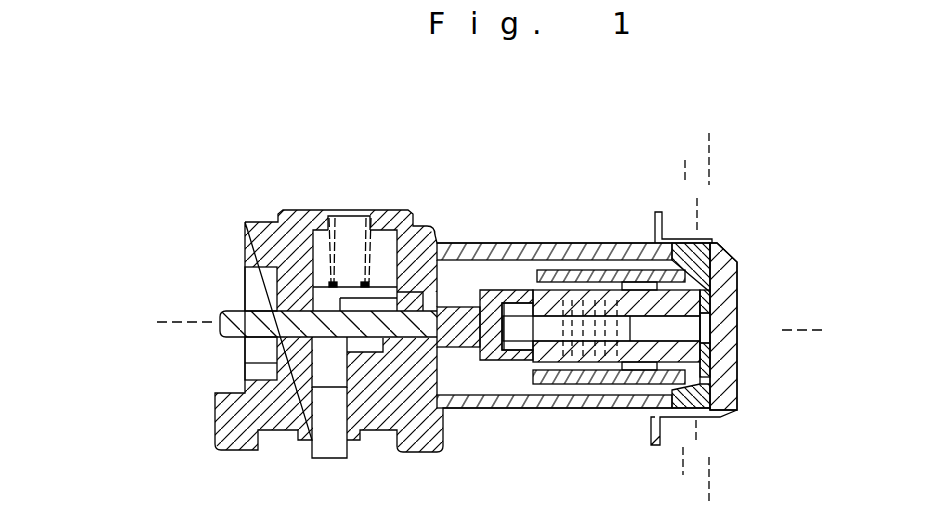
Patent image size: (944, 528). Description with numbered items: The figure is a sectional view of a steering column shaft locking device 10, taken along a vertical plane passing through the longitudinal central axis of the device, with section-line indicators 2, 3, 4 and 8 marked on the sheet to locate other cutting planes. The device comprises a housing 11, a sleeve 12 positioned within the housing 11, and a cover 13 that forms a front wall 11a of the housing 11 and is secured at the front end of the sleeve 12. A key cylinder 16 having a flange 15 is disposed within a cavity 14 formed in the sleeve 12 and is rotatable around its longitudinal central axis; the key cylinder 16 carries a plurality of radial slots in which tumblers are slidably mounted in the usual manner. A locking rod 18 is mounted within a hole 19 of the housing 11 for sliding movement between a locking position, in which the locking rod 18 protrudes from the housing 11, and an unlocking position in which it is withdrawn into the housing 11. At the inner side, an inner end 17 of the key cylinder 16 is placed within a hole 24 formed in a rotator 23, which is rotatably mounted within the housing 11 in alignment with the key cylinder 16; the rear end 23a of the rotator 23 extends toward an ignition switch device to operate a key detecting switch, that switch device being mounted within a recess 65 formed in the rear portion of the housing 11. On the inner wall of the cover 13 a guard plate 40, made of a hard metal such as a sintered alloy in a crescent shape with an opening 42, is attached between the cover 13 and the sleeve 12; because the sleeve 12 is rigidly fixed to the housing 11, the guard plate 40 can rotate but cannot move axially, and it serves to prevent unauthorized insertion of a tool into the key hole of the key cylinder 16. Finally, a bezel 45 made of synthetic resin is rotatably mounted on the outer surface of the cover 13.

The steering column shaft locking device 10 is at (410, 158).
The housing 11 is at (513, 250).
The front wall 11a is at (708, 264).
The sleeve 12 is at (572, 272).
The cover 13 is at (703, 252).
The cavity 14 is at (637, 284).
The flange 15 is at (689, 247).
The key cylinder 16 is at (587, 357).
The inner end 17 is at (525, 340).
The locking rod 18 is at (310, 453).
The hole 19 is at (340, 420).
The rotator 23 is at (455, 342).
The rear end 23a is at (221, 325).
The hole 24 is at (508, 340).
The guard plate 40 is at (702, 359).
The opening 42 is at (702, 332).
The bezel 45 is at (739, 293).
The recess 65 is at (256, 295).
The section line 2- 2 is at (157, 322).
The section line 3- 3 is at (709, 133).
The section line 4- 4 is at (685, 160).
The section line 8- 8 is at (697, 198).